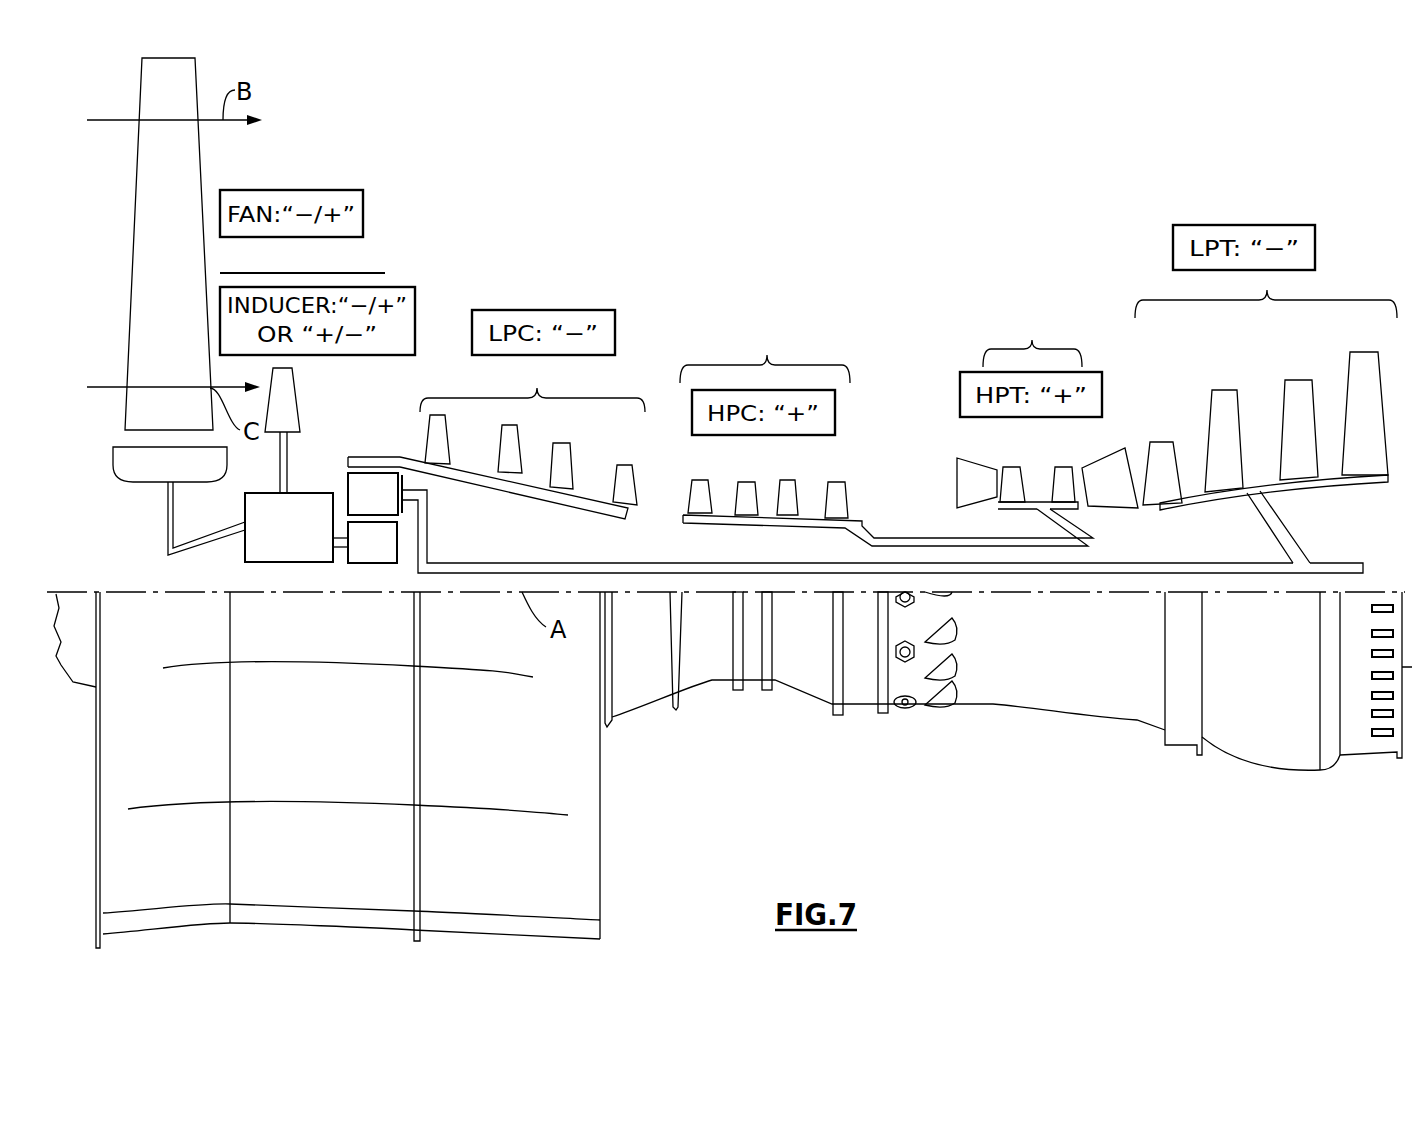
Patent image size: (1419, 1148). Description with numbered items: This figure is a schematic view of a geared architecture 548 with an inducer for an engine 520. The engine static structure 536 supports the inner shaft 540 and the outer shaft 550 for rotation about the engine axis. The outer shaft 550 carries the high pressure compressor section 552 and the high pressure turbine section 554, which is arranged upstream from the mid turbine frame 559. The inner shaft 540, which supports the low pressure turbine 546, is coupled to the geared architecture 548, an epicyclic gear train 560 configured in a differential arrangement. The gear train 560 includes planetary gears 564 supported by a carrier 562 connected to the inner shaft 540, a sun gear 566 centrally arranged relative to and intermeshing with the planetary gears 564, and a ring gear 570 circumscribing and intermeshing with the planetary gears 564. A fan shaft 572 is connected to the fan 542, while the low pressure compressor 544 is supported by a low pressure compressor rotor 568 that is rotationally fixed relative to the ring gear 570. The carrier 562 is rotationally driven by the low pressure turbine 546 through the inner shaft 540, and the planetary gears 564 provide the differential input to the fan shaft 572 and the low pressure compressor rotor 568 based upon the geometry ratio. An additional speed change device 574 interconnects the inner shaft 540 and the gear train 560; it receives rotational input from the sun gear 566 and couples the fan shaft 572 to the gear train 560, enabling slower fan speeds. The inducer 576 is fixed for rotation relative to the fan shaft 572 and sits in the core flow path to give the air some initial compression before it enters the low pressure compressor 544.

The engine 520 is at (824, 209).
The engine static structure 536 is at (953, 433).
The inner shaft 540 is at (612, 572).
The fan 542 is at (185, 168).
The low pressure compressor 544 is at (537, 387).
The low pressure turbine 546 is at (1267, 292).
The geared architecture 548 is at (407, 388).
The outer shaft 550 is at (1000, 546).
The high pressure compressor section 552 is at (767, 357).
The high pressure turbine section 554 is at (1032, 347).
The mid turbine frame 559 is at (1118, 443).
The epicyclic gear train 560 is at (378, 607).
The carrier 562 is at (428, 545).
The planetary gears 564 is at (358, 495).
The sun gear 566 is at (385, 556).
The low pressure compressor rotor 568 is at (487, 477).
The ring gear 570 is at (363, 455).
The fan shaft 572 is at (166, 514).
The speed change device 574 is at (292, 553).
The inducer 576 is at (292, 403).